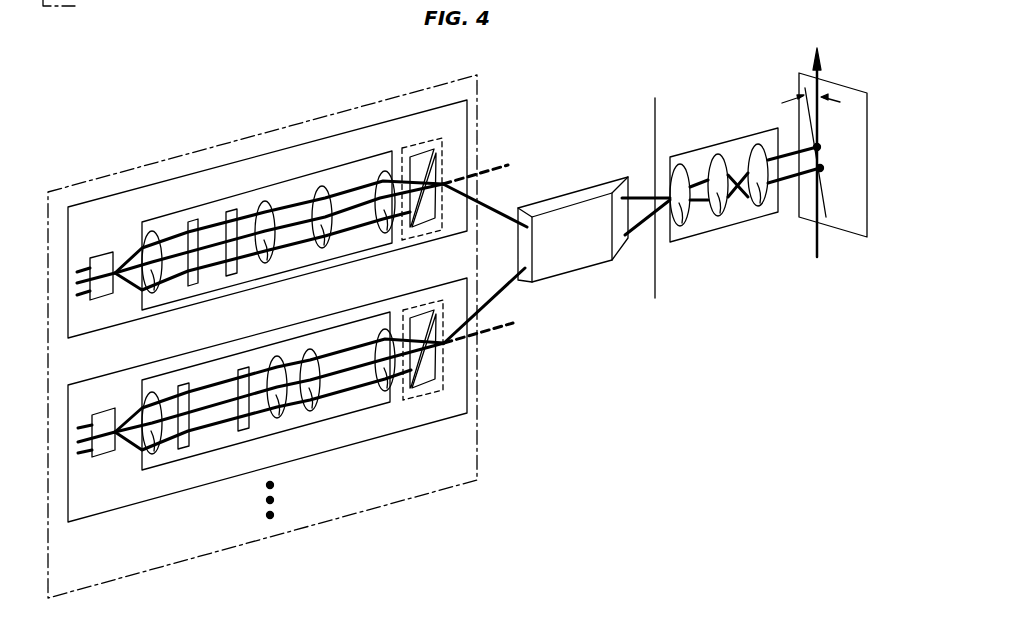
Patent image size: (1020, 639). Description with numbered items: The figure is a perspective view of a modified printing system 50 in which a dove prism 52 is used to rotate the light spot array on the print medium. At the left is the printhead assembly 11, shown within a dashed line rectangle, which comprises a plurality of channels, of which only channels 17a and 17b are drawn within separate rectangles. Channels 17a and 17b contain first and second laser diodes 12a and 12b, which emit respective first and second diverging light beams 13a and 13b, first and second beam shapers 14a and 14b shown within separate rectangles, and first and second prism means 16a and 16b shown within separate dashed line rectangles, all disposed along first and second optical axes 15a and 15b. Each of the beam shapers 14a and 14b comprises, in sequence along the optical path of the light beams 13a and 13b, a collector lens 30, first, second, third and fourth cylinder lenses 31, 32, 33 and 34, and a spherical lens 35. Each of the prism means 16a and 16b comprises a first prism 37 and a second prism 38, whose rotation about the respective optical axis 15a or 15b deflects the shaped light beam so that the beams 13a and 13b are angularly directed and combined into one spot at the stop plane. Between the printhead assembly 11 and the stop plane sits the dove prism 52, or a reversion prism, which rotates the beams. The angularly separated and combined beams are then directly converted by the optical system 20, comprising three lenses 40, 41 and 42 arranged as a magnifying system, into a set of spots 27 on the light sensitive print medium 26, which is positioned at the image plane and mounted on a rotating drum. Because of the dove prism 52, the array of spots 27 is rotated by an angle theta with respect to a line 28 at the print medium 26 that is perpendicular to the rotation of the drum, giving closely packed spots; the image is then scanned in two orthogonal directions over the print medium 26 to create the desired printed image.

The printhead assembly 11 is at (190, 153).
The first laser diode 12a is at (98, 257).
The second laser diode 12b is at (100, 457).
The first light beam 13a is at (128, 277).
The second light beam 13b is at (130, 400).
The first beam shaper 14a is at (297, 177).
The second beam shaper 14b is at (293, 431).
The first optical axis 15a is at (497, 160).
The second optical axis 15b is at (502, 338).
The first prism means 16a is at (432, 140).
The second prism means 16b is at (425, 393).
The first channel 17a is at (133, 185).
The second channel 17b is at (167, 497).
The optical system 20 is at (733, 138).
The print medium 26 is at (850, 187).
The spots 27 is at (822, 165).
The line 28 is at (823, 73).
The collector lens 30 is at (157, 291).
The first cylinder lens 31 is at (193, 287).
The second cylinder lens 32 is at (233, 277).
The third cylinder lens 33 is at (272, 264).
The fourth cylinder lens 34 is at (320, 250).
The spherical lens 35 is at (383, 235).
The first prism 37 is at (413, 228).
The second prism 38 is at (435, 210).
The first lens 40 is at (687, 213).
The second lens 41 is at (720, 207).
The third lens 42 is at (762, 207).
The printing system 50 is at (585, 93).
The dove prism 52 is at (578, 193).